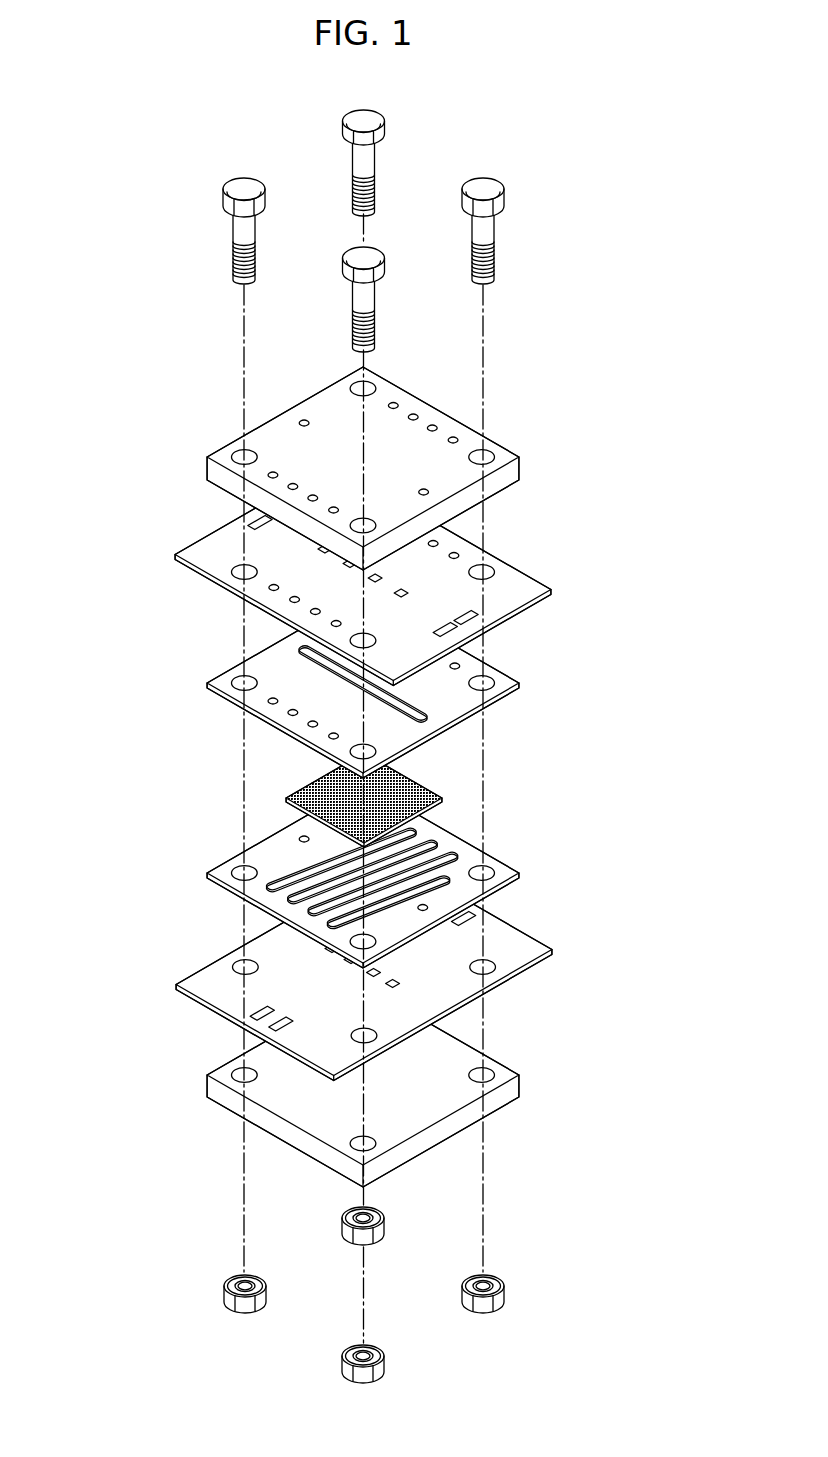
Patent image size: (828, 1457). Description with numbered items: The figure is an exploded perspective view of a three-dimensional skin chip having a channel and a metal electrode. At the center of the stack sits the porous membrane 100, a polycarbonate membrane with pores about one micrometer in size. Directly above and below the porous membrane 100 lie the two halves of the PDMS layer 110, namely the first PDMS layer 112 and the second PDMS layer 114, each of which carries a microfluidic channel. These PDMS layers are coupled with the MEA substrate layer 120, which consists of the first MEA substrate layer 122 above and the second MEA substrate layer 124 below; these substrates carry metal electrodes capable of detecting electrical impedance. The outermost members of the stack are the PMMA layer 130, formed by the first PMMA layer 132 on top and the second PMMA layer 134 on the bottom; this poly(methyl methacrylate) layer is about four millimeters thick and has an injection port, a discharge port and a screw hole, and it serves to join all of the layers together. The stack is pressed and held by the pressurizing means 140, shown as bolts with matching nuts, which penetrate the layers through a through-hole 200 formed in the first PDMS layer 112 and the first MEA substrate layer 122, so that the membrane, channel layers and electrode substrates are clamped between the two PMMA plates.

The porous membrane 100 is at (278, 796).
The PDMS layer 110 is at (399, 780).
The first PDMS layer 112 is at (493, 703).
The second PDMS layer 114 is at (493, 852).
The MEA substrate layer 120 is at (439, 772).
The first MEA substrate layer 122 is at (407, 575).
The second MEA substrate layer 124 is at (520, 935).
The PMMA layer 130 is at (379, 777).
The first PMMA layer 132 is at (318, 468).
The second PMMA layer 134 is at (218, 1086).
The pressurizing means 140 is at (503, 194).
The through-hole 200 is at (361, 468).